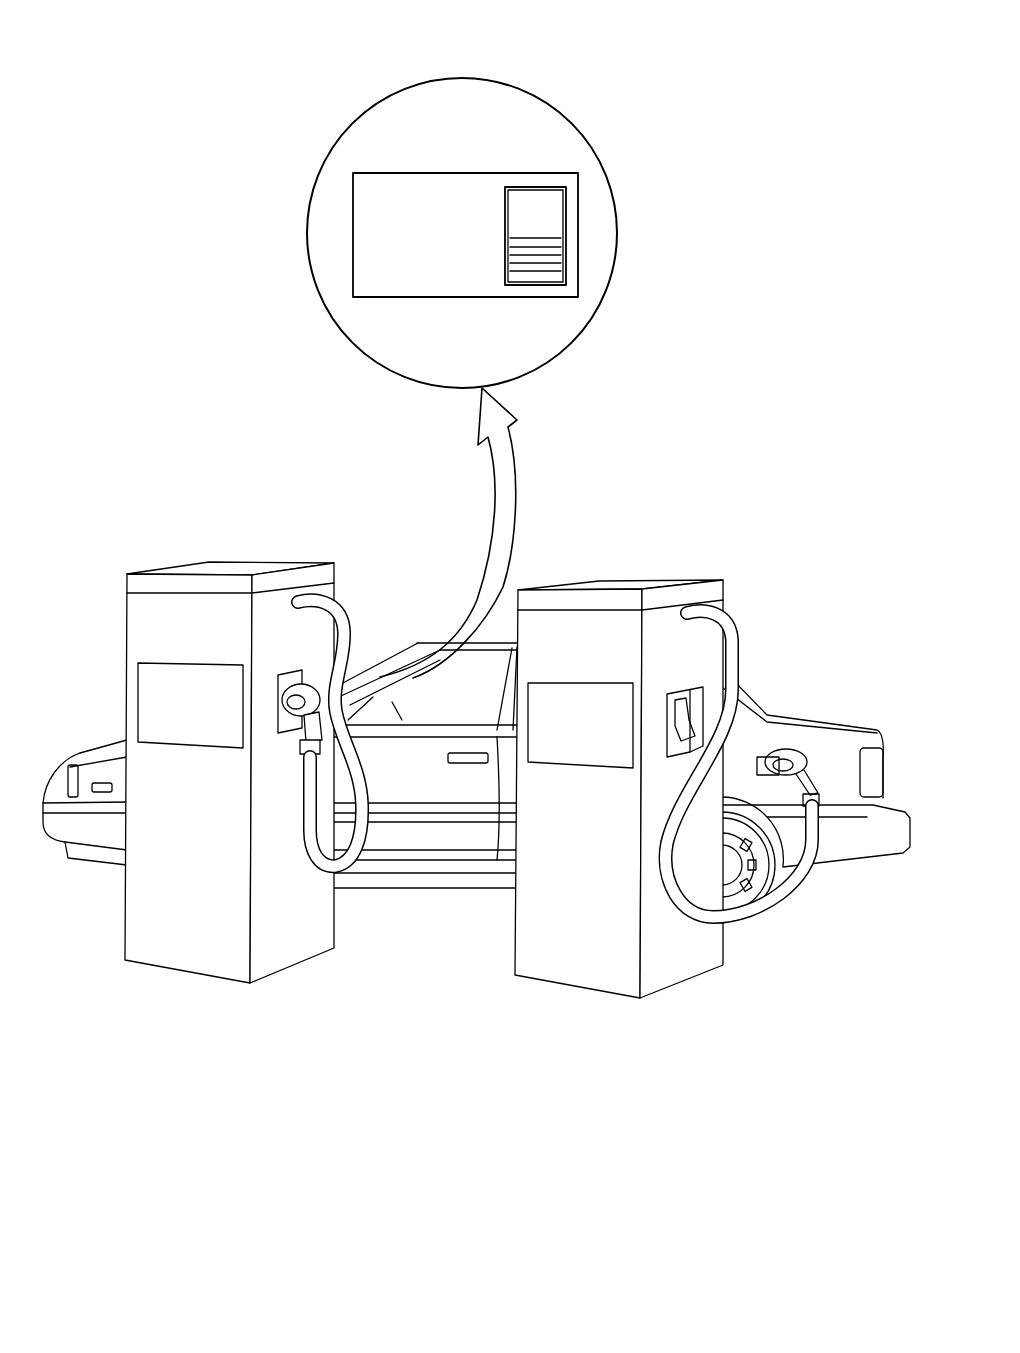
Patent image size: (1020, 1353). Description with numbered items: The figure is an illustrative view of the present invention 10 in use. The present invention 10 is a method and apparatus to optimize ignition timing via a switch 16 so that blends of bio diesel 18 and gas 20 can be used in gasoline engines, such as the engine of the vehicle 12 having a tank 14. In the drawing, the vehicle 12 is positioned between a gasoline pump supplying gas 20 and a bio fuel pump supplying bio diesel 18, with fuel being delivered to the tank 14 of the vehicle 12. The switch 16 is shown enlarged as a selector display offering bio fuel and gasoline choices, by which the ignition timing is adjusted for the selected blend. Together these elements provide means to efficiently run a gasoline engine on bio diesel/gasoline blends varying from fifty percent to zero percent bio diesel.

The present invention 10 is at (133, 172).
The vehicle 12 is at (830, 740).
The tank 14 is at (752, 745).
The switch 16 is at (458, 183).
The bio diesel 18 is at (605, 598).
The gas 20 is at (217, 573).